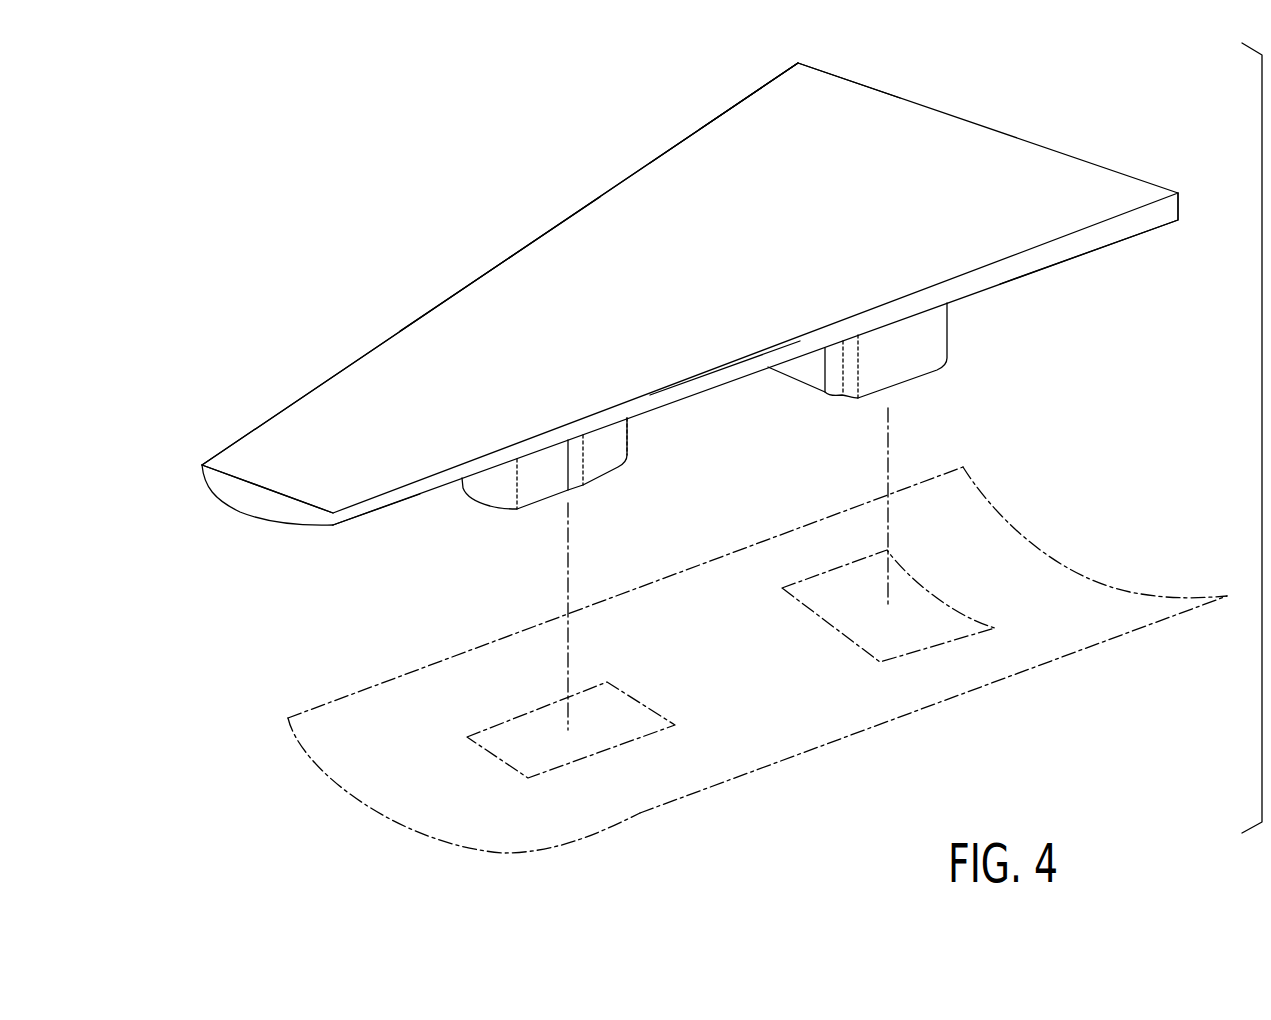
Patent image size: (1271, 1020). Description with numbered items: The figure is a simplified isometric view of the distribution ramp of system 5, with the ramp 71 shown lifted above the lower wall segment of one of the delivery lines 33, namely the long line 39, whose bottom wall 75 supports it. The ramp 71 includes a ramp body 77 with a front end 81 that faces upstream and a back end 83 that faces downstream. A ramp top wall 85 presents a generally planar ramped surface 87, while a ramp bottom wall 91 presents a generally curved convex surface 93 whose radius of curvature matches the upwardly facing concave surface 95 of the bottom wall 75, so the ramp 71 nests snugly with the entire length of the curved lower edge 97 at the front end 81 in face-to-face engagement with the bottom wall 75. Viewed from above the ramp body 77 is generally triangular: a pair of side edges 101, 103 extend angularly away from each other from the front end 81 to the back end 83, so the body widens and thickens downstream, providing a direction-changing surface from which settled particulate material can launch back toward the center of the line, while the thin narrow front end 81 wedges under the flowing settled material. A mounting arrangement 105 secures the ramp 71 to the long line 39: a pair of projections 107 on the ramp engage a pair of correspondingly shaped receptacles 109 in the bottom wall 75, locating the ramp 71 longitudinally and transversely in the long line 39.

The system 5 is at (333, 176).
The ramp 71 is at (432, 193).
The ramp body 77 is at (527, 210).
The front end 81 is at (206, 441).
The back end 83 is at (754, 69).
The ramp top wall 85 is at (707, 170).
The ramped surface 87 is at (743, 130).
The ramp bottom wall 91 is at (407, 505).
The convex surface 93 is at (355, 515).
The curved lower edge 97 is at (226, 503).
The side edge 101 is at (718, 375).
The side edge 103 is at (496, 266).
The mounting arrangement 105 is at (1029, 331).
The projections 107 is at (604, 457).
The delivery lines 33 is at (1164, 561).
The long line 39 is at (1199, 609).
The bottom wall 75 is at (1015, 658).
The concave surface 95 is at (351, 783).
The receptacles 109 is at (603, 748).